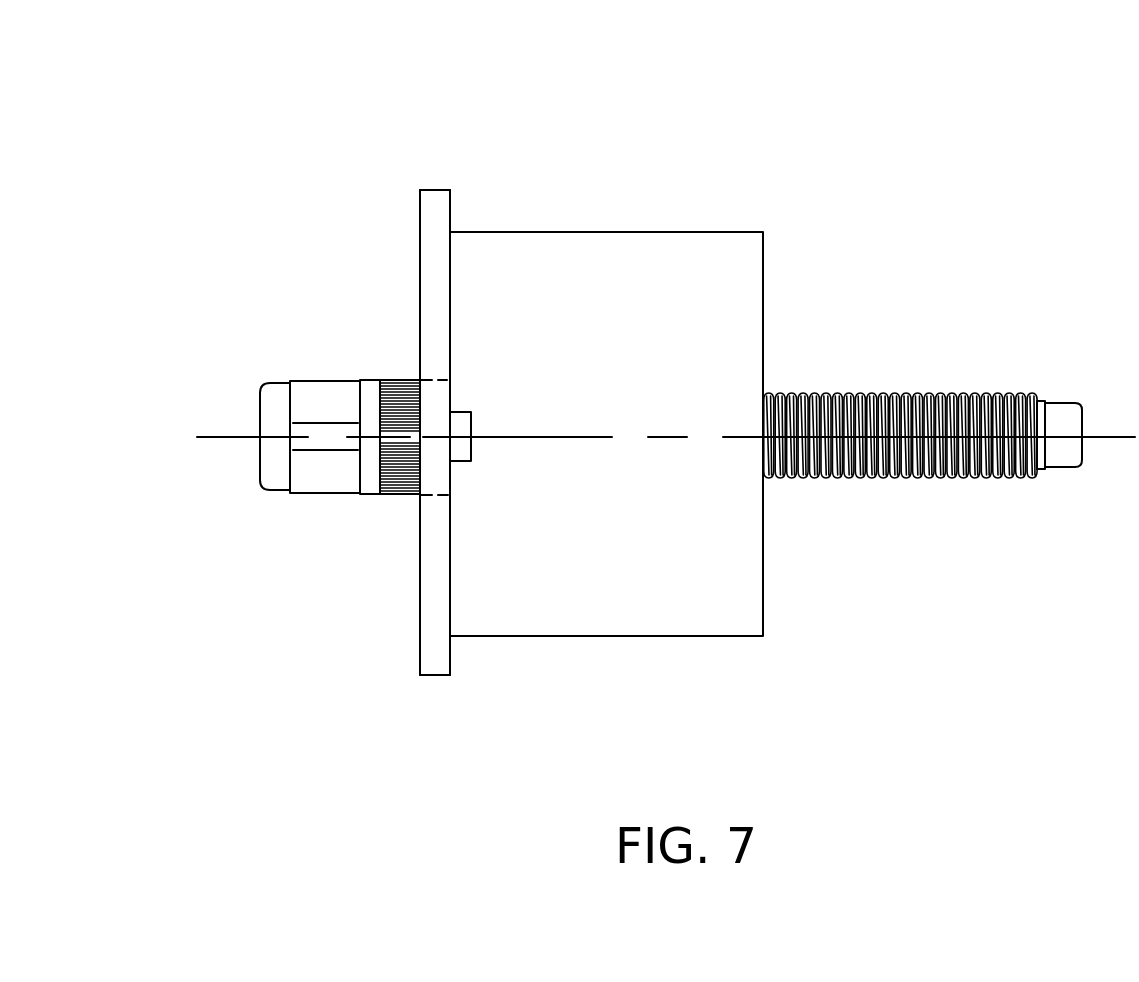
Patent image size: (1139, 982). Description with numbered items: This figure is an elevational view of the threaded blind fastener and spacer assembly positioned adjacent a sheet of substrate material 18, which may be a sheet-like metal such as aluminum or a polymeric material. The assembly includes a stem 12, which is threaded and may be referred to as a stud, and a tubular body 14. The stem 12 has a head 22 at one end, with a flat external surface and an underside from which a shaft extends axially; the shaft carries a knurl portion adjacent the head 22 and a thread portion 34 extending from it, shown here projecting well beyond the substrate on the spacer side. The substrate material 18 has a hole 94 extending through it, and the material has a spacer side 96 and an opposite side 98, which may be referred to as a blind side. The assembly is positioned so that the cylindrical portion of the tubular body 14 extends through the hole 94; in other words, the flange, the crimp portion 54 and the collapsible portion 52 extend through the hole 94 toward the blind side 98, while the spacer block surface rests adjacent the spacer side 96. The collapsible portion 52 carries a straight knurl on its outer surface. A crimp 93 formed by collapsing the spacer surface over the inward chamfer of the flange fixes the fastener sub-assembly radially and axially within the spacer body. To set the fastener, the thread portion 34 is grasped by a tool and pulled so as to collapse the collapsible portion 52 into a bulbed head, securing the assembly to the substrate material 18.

The stem 12 is at (938, 445).
The tubular body 14 is at (296, 453).
The substrate material 18 is at (445, 178).
The head 22 is at (262, 492).
The thread portion 34 is at (930, 480).
The collapsible portion 52 is at (399, 497).
The crimp portion 54 is at (310, 380).
The crimp 93 is at (467, 412).
The hole 94 is at (430, 377).
The spacer side 96 is at (450, 200).
The opposite side 98 is at (420, 198).